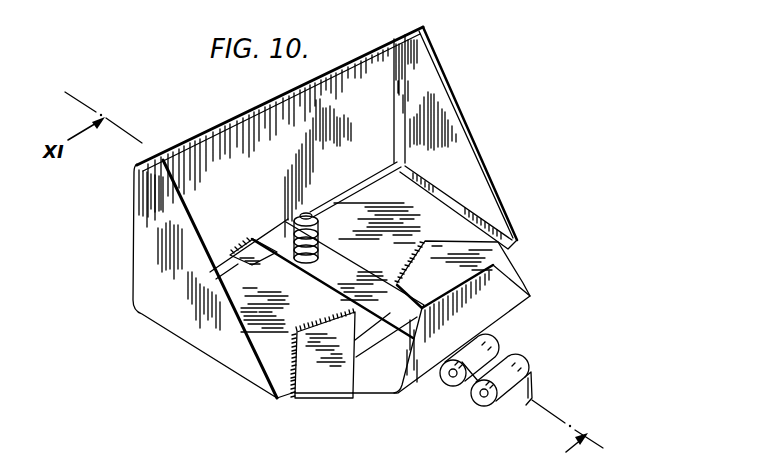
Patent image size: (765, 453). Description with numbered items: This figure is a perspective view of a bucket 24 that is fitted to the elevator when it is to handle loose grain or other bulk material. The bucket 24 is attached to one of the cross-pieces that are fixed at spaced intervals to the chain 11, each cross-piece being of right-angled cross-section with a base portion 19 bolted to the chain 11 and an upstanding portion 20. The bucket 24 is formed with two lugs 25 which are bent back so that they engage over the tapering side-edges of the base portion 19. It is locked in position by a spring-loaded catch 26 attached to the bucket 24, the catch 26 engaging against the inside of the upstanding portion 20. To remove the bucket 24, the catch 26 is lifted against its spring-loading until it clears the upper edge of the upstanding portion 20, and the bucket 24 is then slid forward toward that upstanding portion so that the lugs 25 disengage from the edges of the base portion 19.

The chain 11 is at (493, 355).
The base portion 19 is at (373, 378).
The upstanding portion 20 is at (490, 310).
The bucket 24 is at (452, 123).
The lugs 25 is at (498, 263).
The spring-loaded catch 26 is at (372, 288).